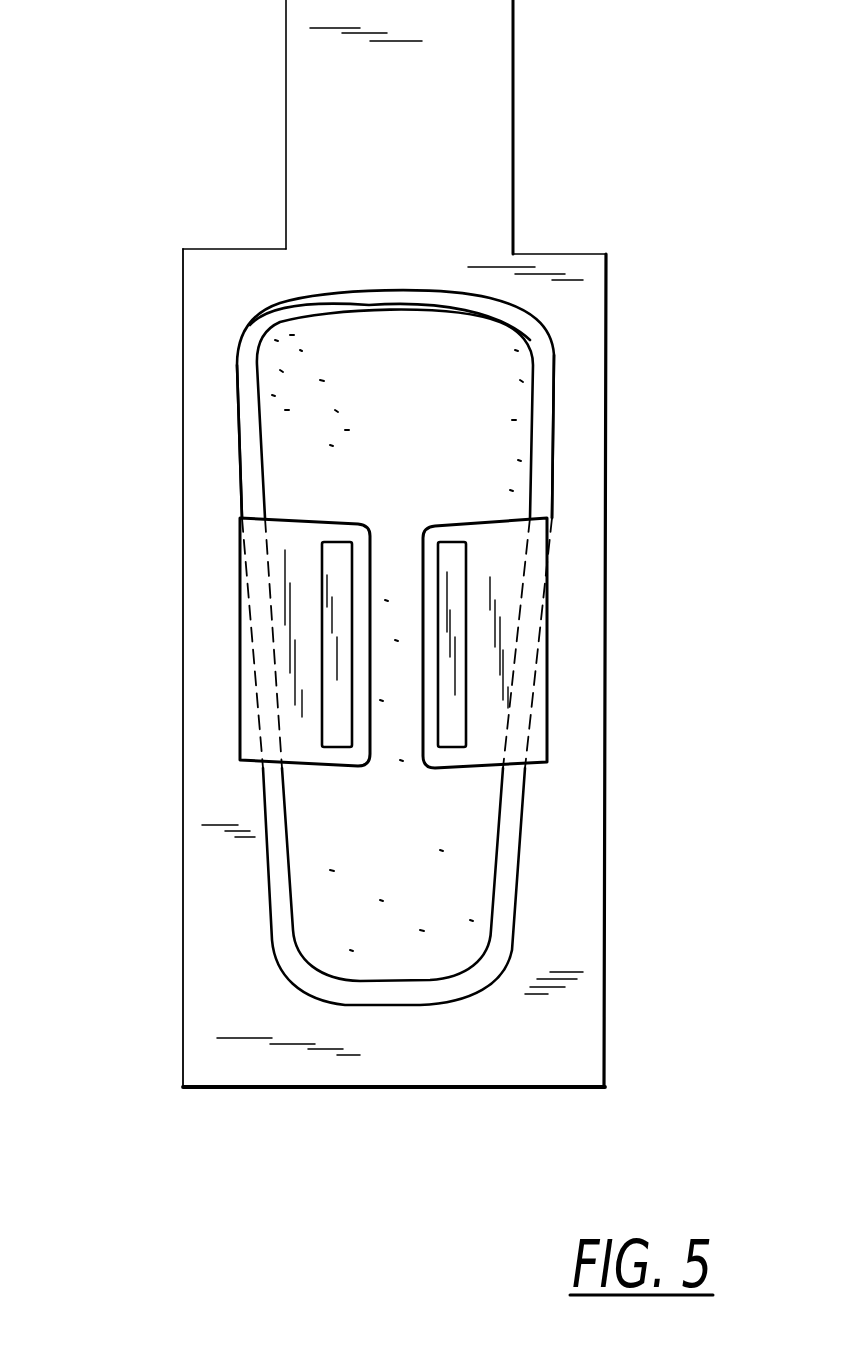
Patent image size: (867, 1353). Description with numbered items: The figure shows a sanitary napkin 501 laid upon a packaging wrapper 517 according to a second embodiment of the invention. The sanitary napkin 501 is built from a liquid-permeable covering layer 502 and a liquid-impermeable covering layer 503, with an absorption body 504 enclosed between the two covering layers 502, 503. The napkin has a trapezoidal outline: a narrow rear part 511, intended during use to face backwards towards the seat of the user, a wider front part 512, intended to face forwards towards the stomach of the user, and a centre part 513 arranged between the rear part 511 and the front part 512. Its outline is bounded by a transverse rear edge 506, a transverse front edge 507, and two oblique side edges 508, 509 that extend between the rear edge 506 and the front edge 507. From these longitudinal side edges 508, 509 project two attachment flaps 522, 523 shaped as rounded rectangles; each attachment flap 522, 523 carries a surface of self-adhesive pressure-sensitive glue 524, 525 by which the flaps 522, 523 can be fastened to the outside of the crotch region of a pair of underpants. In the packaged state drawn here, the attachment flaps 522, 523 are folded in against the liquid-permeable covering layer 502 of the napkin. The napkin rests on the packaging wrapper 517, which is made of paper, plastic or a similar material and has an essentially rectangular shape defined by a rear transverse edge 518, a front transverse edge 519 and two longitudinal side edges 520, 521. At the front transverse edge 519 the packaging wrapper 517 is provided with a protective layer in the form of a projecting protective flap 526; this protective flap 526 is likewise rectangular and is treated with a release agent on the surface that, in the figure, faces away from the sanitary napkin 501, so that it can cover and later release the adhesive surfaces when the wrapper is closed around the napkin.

The sanitary napkin 501 is at (498, 367).
The liquid-permeable covering layer 502 is at (500, 417).
The liquid-impermeable covering layer 503 is at (528, 450).
The absorption body 504 is at (307, 420).
The transverse rear edge 506 is at (397, 1008).
The transverse front edge 507 is at (421, 286).
The oblique side edge 508 is at (548, 502).
The oblique side edge 509 is at (243, 483).
The rear part 511 is at (463, 887).
The front part 512 is at (273, 363).
The centre part 513 is at (395, 660).
The packaging wrapper 517 is at (583, 1005).
The rear transverse edge 518 is at (270, 1088).
The front transverse edge 519 is at (247, 249).
The longitudinal side edge 520 is at (606, 583).
The longitudinal side edge 521 is at (180, 878).
The attachment flap 522 is at (492, 673).
The attachment flap 523 is at (258, 637).
The self-adhesive pressure-sensitive glue 524 is at (452, 720).
The self-adhesive pressure-sensitive glue 525 is at (335, 572).
The protective flap 526 is at (483, 102).